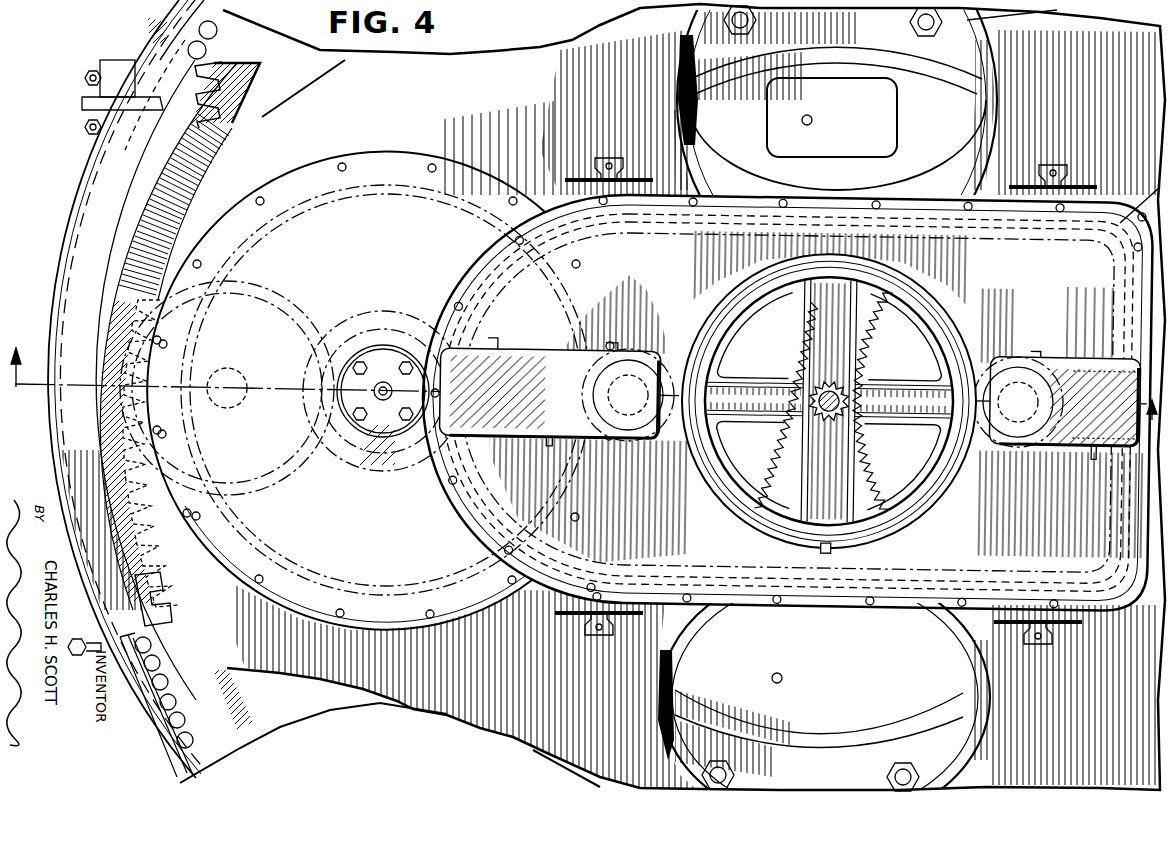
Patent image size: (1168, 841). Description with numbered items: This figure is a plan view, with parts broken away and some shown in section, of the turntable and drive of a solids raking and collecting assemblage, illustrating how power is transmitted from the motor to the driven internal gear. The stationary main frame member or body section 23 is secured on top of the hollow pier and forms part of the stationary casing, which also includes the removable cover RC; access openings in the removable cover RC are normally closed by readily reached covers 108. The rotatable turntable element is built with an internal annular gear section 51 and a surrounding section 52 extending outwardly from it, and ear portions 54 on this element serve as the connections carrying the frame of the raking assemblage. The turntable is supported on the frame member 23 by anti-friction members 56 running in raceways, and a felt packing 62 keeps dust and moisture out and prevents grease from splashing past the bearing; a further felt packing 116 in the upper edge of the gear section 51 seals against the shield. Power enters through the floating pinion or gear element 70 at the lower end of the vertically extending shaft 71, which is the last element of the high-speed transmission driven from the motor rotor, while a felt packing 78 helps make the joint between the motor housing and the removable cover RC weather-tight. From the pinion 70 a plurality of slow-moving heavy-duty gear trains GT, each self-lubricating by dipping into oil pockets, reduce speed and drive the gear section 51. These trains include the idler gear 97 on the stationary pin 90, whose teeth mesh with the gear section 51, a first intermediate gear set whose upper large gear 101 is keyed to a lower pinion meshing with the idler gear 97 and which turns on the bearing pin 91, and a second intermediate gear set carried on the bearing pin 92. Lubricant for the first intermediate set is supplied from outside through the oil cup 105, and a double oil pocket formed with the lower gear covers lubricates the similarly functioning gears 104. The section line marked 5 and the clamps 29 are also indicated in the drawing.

The stationary main frame member or body section 23 is at (220, 748).
The clamp 29 is at (606, 178).
The section line 5- 5 is at (584, 374).
The surrounding section 52 is at (104, 232).
The felt packing 116 is at (203, 70).
The ear portions 54 is at (110, 62).
The upper large gear 101 is at (393, 197).
The idler gear 97 is at (188, 324).
The idler gear bearing pin or stationary shaft 90 is at (227, 408).
The oil cup 105 is at (382, 395).
The first intermediate gear set bearing pin or shaft 91 is at (346, 340).
The removable cover RC is at (913, 498).
The covers 108 is at (550, 392).
The second intermediate gear set bearing pin or shaft 92 is at (650, 350).
The felt packing 78 is at (727, 303).
The trains of speed reducing and power transmission gearing GT is at (828, 400).
The gears 104 is at (870, 326).
The pinion or floating gear element 70 is at (826, 380).
The vertically extending shaft 71 is at (828, 418).
The internal annular gear section 51 is at (172, 626).
The anti-friction members 56 is at (172, 703).
The felt packing 62 is at (165, 745).